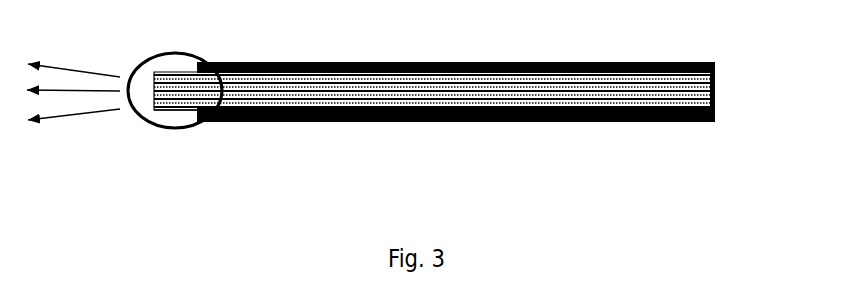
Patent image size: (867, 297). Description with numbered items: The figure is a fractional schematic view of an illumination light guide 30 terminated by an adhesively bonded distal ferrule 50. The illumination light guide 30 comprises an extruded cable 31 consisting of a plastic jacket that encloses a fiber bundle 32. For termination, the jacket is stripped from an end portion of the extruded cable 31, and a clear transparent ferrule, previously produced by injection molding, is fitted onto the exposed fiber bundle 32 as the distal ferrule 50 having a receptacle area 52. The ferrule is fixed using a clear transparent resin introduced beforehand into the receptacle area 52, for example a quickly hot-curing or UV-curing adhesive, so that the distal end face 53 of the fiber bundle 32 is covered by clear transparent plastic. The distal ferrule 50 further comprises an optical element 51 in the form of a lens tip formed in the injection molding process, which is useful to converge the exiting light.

The illumination light guide 30 is at (475, 111).
The extruded cable 31 is at (427, 123).
The fiber bundle 32 is at (305, 95).
The distal ferrule 50 is at (183, 113).
The optical element 51 is at (142, 88).
The receptacle area 52 is at (175, 110).
The distal end face 53 is at (155, 93).